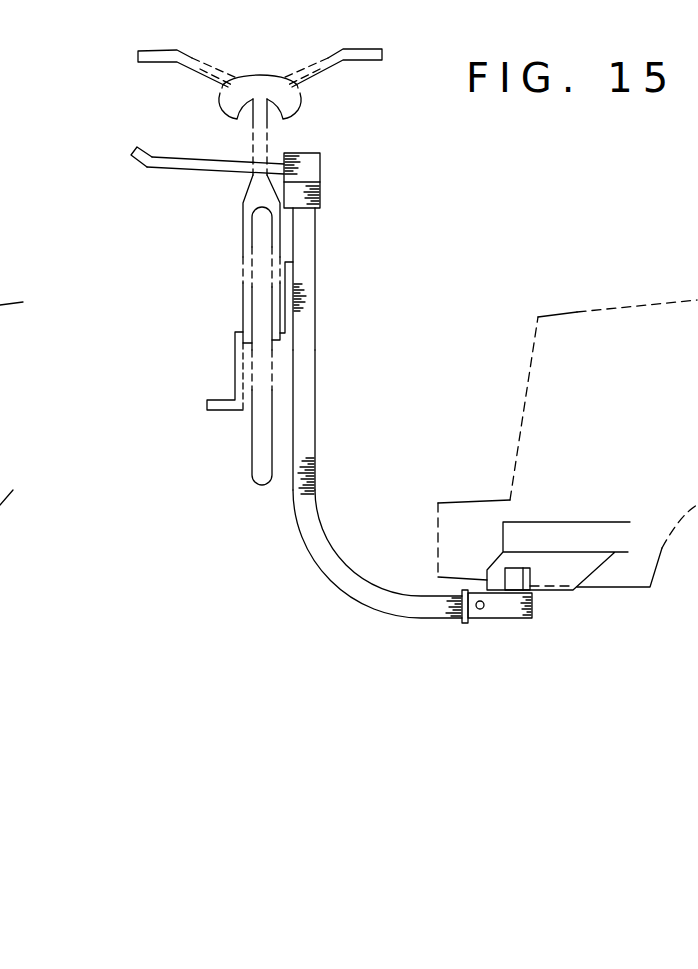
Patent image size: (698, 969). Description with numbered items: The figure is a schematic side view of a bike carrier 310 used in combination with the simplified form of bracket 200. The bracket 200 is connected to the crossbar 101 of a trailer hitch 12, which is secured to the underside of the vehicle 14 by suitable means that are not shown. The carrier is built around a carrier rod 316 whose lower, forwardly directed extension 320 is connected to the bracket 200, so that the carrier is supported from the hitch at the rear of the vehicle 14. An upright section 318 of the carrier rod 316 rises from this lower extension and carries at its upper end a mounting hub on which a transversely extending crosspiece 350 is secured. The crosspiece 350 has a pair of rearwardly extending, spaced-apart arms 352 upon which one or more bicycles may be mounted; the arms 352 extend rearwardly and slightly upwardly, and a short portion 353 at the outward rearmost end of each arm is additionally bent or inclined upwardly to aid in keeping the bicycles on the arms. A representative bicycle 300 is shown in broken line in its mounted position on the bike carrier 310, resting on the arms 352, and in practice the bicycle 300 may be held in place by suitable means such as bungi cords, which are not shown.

The bicycle 300 is at (187, 53).
The crosspiece 350 is at (320, 165).
The arm 352 is at (213, 175).
The short portion 353 is at (137, 163).
The bike carrier 310 is at (372, 420).
The upright section 318 is at (315, 326).
The carrier rod 316 is at (330, 400).
The forwardly directed extension 320 is at (423, 618).
The bracket 200 is at (515, 630).
The trailer hitch 12 is at (562, 600).
The crossbar 101 is at (541, 583).
The vehicle 14 is at (579, 303).